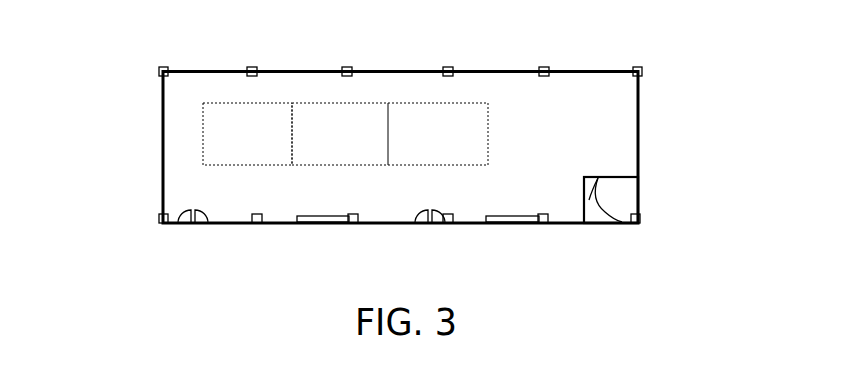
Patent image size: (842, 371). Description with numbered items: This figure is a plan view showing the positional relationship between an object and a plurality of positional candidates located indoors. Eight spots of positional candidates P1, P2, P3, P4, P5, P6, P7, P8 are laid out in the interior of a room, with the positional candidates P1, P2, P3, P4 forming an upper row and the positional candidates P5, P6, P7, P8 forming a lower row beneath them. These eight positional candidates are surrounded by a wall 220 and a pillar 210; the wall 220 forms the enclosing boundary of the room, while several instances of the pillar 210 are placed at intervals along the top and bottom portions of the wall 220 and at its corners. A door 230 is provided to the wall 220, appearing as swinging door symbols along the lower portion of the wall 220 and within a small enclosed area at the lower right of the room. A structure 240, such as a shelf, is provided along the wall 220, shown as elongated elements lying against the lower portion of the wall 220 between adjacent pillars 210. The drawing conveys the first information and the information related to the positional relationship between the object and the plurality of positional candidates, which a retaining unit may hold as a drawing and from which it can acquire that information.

The pillar 210 is at (160, 67).
The wall 220 is at (163, 143).
The door 230 is at (200, 225).
The structure 240 is at (323, 222).
The positional candidate P1 is at (204, 104).
The positional candidate P2 is at (293, 104).
The positional candidate P3 is at (389, 104).
The positional candidate P4 is at (489, 104).
The positional candidate P5 is at (204, 166).
The positional candidate P6 is at (293, 166).
The positional candidate P7 is at (389, 166).
The positional candidate P8 is at (489, 166).